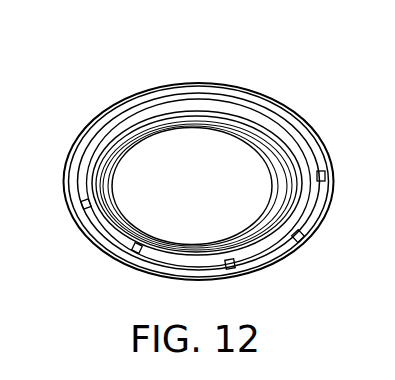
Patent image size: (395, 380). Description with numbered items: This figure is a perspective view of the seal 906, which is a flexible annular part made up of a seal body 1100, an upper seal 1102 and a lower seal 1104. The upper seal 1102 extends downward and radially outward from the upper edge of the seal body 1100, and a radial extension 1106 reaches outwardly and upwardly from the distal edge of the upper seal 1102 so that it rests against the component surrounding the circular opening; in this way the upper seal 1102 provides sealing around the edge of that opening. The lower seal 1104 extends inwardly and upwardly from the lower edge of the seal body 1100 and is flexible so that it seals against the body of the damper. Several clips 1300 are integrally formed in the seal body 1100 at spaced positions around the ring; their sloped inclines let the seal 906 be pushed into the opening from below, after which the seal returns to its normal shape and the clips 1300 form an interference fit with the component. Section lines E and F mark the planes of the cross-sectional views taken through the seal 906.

The seal 906 is at (314, 89).
The seal body 1100 is at (186, 104).
The upper seal 1102 is at (326, 181).
The lower seal 1104 is at (115, 186).
The radial extension 1106 is at (127, 90).
The clips 1300 is at (132, 252).
The section line E- E is at (338, 140).
The section line F- F is at (278, 195).